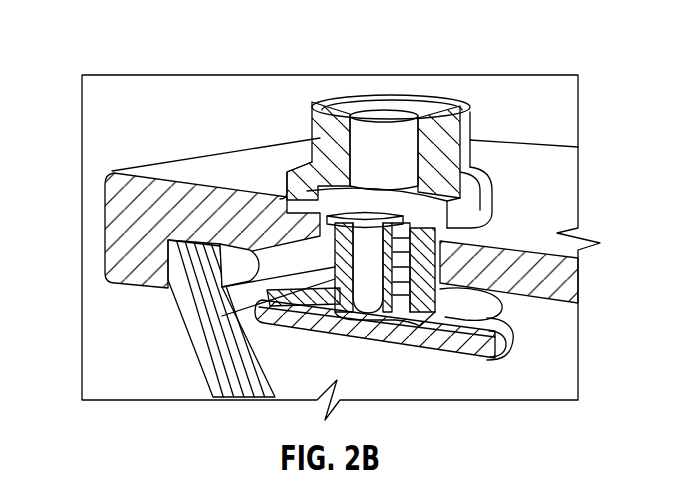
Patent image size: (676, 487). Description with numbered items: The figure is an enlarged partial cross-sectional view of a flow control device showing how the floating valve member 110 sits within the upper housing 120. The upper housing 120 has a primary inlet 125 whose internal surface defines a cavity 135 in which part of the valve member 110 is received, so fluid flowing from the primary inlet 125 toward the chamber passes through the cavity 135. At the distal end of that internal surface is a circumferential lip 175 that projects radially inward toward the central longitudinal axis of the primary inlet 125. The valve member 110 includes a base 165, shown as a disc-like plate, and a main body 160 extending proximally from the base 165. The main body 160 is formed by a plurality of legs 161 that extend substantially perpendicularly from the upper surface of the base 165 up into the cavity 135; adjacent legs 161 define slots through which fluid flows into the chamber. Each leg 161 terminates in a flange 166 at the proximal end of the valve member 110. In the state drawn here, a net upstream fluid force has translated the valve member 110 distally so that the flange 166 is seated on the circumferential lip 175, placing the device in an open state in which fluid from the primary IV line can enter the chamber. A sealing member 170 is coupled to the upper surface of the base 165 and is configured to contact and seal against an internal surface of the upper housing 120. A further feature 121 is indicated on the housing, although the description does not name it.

The valve member 110 is at (402, 350).
The upper housing 120 is at (130, 193).
The bracket tab 121 is at (222, 287).
The primary inlet 125 is at (424, 93).
The cavity 135 is at (330, 213).
The main body 160 is at (446, 274).
The legs 161 is at (470, 172).
The base 165 is at (508, 348).
The flange 166 is at (282, 198).
The sealing member 170 is at (506, 311).
The circumferential lip 175 is at (222, 316).